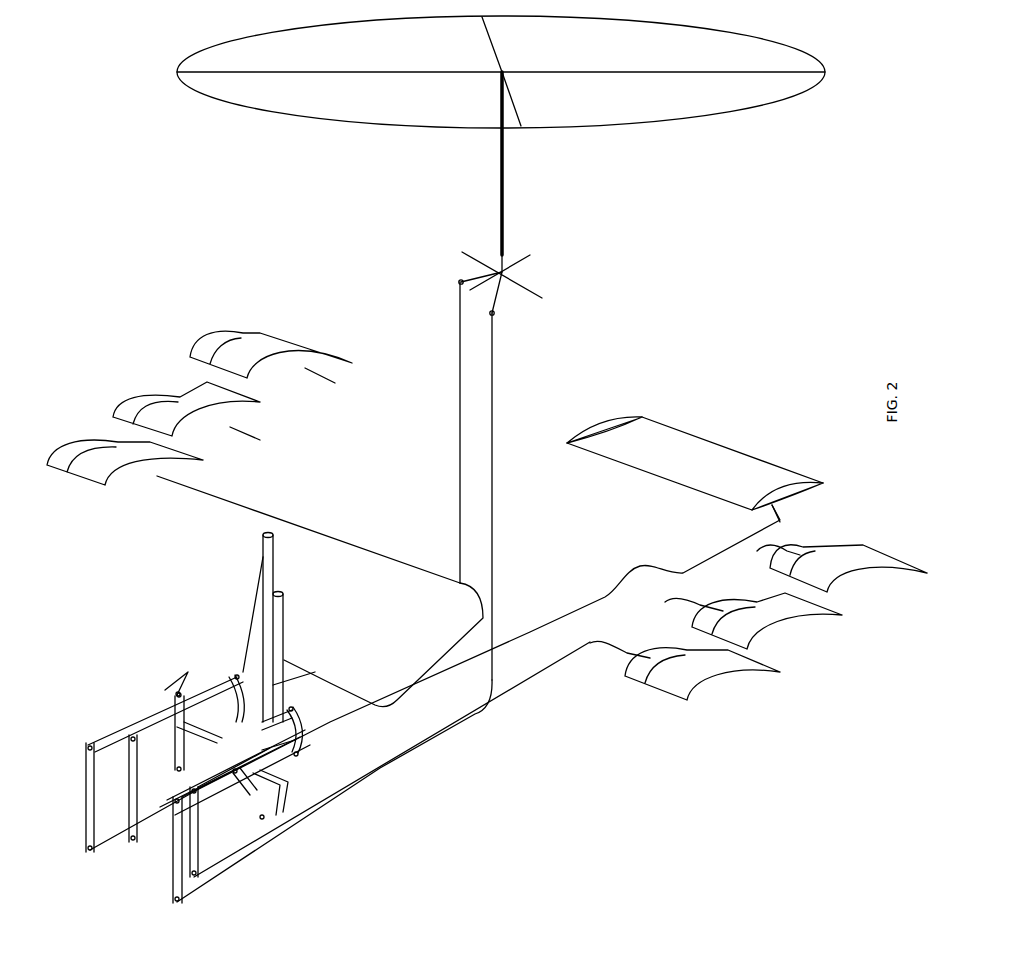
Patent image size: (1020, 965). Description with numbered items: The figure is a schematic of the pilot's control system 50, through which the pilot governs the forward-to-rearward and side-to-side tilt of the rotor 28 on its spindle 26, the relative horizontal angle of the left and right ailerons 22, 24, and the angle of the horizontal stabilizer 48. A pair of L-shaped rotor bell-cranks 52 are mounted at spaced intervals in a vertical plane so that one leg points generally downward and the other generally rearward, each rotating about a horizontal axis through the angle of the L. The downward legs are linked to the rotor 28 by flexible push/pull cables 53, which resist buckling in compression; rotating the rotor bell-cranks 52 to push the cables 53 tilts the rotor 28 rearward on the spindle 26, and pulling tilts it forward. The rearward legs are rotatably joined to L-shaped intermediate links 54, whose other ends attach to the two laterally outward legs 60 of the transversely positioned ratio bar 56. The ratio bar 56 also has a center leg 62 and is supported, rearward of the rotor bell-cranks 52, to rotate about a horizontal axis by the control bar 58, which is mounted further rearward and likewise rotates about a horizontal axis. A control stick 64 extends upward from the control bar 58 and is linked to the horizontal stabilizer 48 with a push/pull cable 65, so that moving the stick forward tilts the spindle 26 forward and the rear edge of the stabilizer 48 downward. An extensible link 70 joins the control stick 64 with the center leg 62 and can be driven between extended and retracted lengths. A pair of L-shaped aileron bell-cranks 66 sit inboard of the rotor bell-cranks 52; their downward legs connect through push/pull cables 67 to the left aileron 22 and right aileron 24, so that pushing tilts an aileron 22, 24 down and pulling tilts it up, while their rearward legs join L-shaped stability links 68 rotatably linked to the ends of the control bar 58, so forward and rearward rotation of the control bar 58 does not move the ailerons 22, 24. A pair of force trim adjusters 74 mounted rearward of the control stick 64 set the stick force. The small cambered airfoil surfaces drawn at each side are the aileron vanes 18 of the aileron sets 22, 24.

The airfoil vane 18 is at (97, 450).
The left aileron 22 is at (779, 660).
The right aileron 24 is at (140, 437).
The spindle 26 is at (504, 180).
The rotor 28 is at (712, 115).
The horizontal stabilizer 48 is at (698, 446).
The control system 50 is at (208, 734).
The rotor bell-crank 52 is at (83, 837).
The push/pull cable 53 is at (462, 518).
The intermediate link 54 is at (165, 683).
The ratio bar 56 is at (250, 795).
The control bar 58 is at (313, 762).
The outward leg 60 is at (155, 698).
The center leg 62 is at (228, 795).
The control stick 64 is at (263, 558).
The push/pull cable 65 is at (307, 683).
The aileron bell-crank 66 is at (140, 827).
The push/pull cable 67 is at (273, 518).
The stability link 68 is at (222, 700).
The extensible link 70 is at (231, 633).
The force trim adjuster 74 is at (283, 627).